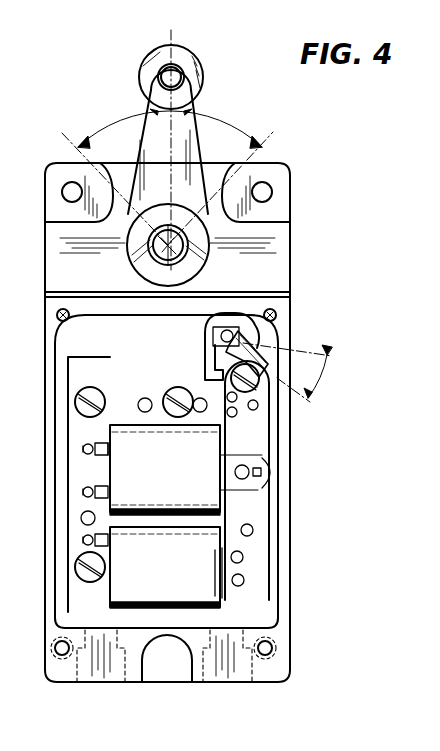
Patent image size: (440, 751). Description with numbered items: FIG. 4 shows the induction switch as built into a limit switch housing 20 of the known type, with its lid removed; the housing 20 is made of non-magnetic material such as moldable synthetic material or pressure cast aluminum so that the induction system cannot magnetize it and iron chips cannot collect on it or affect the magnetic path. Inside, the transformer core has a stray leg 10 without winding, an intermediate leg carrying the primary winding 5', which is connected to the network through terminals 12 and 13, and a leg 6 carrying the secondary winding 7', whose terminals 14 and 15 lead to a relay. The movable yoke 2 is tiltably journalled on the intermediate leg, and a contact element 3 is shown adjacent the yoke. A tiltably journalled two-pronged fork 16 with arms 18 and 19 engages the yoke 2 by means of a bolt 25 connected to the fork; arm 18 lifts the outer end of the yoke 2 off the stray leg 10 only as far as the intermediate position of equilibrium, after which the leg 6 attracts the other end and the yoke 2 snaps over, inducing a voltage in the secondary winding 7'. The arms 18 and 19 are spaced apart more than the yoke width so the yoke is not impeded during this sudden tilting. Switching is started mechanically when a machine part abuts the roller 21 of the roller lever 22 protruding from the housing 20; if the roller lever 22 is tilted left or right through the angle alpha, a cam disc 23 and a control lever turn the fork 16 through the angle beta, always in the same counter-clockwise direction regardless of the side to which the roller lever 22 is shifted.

The movable yoke 2 is at (258, 511).
The contact element 3 is at (243, 464).
The primary winding 5' is at (165, 438).
The leg 6 is at (222, 585).
The secondary winding 7' is at (170, 622).
The stray leg 10 is at (103, 394).
The terminal 12 is at (84, 450).
The terminal 13 is at (84, 492).
The terminal 14 is at (100, 534).
The terminal 15 is at (93, 589).
The two-pronged fork 16 is at (228, 325).
The arm 18 is at (208, 358).
The arm 19 is at (255, 345).
The limit switch housing 20 is at (88, 306).
The roller 21 is at (140, 69).
The roller lever 22 is at (149, 138).
The cam disc 23 is at (439, 628).
The bolt 25 is at (248, 385).